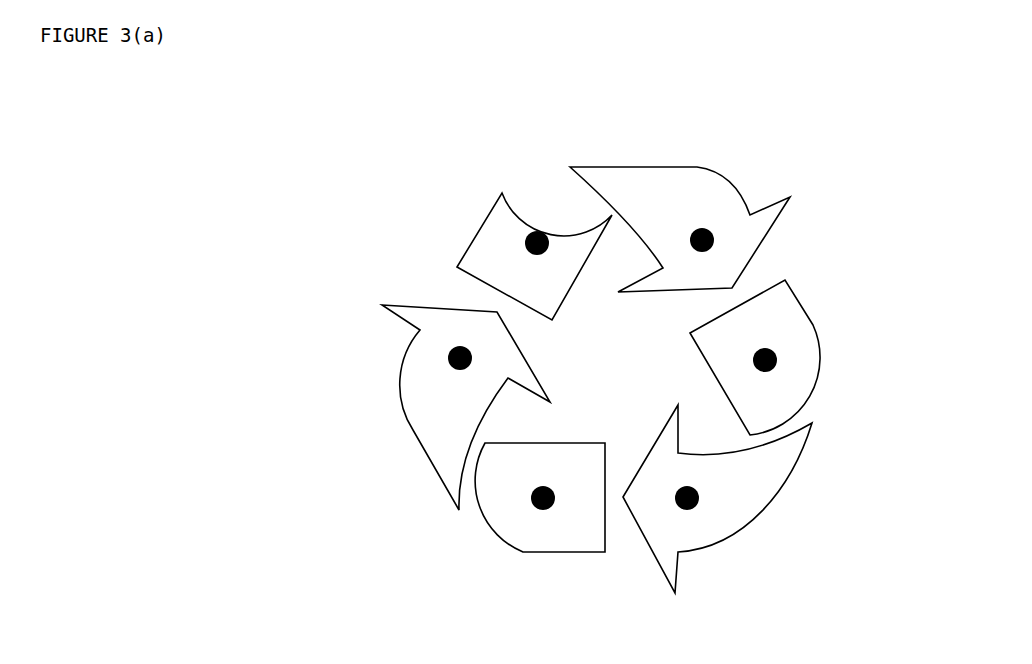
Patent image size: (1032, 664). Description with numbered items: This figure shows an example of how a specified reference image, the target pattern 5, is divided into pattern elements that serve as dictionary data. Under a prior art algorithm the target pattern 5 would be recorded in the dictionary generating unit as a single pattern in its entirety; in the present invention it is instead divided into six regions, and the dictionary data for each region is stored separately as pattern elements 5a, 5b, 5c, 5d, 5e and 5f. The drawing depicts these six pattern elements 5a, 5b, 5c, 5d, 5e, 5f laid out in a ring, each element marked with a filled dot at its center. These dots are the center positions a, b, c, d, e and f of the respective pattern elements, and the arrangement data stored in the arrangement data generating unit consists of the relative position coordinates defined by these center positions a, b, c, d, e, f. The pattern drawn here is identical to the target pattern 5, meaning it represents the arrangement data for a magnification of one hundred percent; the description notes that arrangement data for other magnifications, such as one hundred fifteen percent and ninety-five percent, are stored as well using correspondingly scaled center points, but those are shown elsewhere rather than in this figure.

The target pattern 5 is at (613, 351).
The pattern element 5a is at (413, 433).
The pattern element 5b is at (505, 197).
The pattern element 5c is at (698, 167).
The pattern element 5d is at (803, 310).
The pattern element 5e is at (760, 518).
The pattern element 5f is at (490, 533).
The center position a is at (448, 362).
The center position b is at (525, 242).
The center position c is at (706, 232).
The center position d is at (777, 360).
The center position e is at (690, 509).
The center position f is at (543, 510).